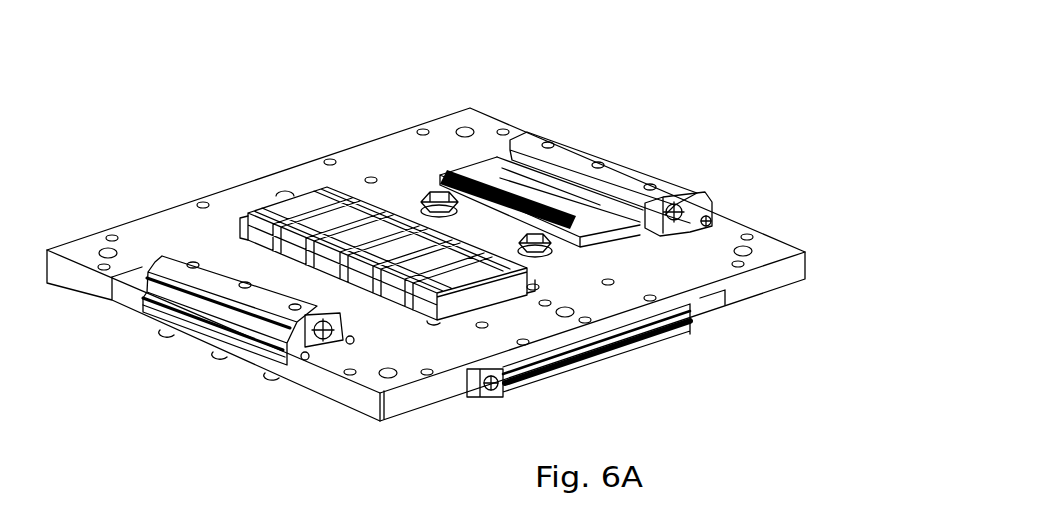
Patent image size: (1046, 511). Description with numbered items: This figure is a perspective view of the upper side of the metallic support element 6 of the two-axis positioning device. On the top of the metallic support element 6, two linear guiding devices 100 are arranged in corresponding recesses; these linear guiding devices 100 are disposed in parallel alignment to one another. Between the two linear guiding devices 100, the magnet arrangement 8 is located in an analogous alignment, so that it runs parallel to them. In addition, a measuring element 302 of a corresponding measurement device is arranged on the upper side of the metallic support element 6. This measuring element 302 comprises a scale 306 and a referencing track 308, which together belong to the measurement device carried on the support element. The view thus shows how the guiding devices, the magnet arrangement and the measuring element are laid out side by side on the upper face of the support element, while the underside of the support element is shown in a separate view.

The metallic support element 6 is at (763, 280).
The magnet arrangement 8 is at (289, 212).
The linear guiding devices 100 is at (655, 155).
The measuring element 302 is at (484, 173).
The scale 306 is at (703, 208).
The referencing track 308 is at (543, 181).